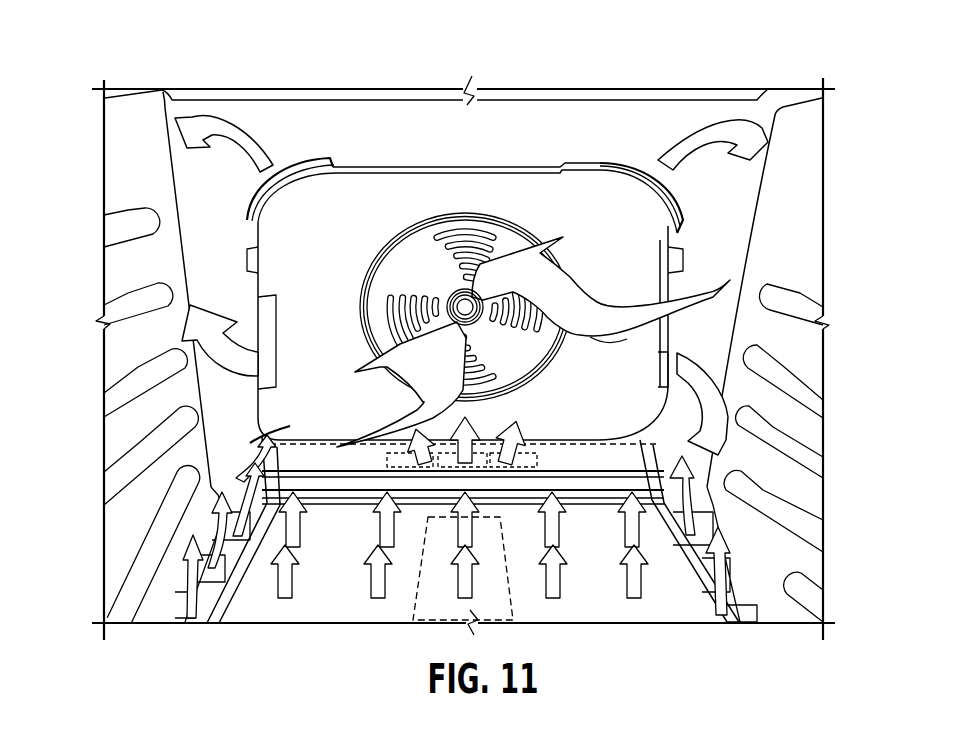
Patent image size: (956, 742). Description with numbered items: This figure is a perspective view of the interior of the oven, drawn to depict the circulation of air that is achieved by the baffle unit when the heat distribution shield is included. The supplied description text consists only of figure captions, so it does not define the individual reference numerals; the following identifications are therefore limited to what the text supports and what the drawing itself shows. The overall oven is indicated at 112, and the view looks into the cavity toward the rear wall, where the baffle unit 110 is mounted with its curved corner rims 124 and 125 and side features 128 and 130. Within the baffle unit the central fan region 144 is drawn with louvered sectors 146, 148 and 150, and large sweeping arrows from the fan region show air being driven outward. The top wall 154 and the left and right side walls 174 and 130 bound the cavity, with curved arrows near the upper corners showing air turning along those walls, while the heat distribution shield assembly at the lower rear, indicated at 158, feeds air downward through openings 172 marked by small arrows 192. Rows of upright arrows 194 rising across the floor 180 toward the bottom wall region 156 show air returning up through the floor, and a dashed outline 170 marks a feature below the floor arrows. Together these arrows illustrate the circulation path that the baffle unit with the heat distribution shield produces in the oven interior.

The back panel / fan cover 110 is at (612, 212).
The oven appliance 112 is at (725, 67).
The left rim of cover 124 is at (290, 158).
The right rim of cover 125 is at (678, 184).
The side latch bar 128 is at (252, 308).
The right side wall 130 is at (680, 328).
The fan 144 is at (490, 243).
The fan inlet region 146 is at (373, 342).
The first fan region 148 is at (405, 282).
The second fan region 150 is at (488, 359).
The top wall 154 is at (356, 145).
The bottom wall 156 is at (150, 613).
The plenum edge 158 is at (262, 434).
The heating element 170 is at (433, 598).
The air openings 172 is at (447, 462).
The left side wall 174 is at (158, 142).
The floor rails 180 is at (238, 610).
The air outlet arrows 192 is at (448, 400).
The airflow through floor 194 is at (598, 600).